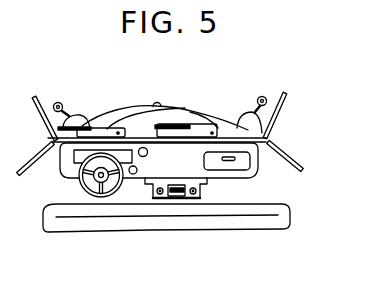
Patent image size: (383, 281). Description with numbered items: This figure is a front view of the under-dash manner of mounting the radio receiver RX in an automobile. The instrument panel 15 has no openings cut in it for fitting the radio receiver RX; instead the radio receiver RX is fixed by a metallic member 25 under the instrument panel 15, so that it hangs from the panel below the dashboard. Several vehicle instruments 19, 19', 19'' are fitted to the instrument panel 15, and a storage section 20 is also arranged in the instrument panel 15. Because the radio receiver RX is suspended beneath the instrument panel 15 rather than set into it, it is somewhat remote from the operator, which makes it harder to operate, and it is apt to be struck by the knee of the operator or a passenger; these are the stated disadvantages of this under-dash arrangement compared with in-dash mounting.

The instrument panel 15 is at (270, 138).
The vehicle instrument 19 is at (80, 172).
The vehicle instrument 19' is at (136, 110).
The vehicle instrument 19'' is at (161, 163).
The storage section 20 is at (240, 166).
The metallic member 25 is at (151, 184).
The radio receiver RX is at (190, 198).